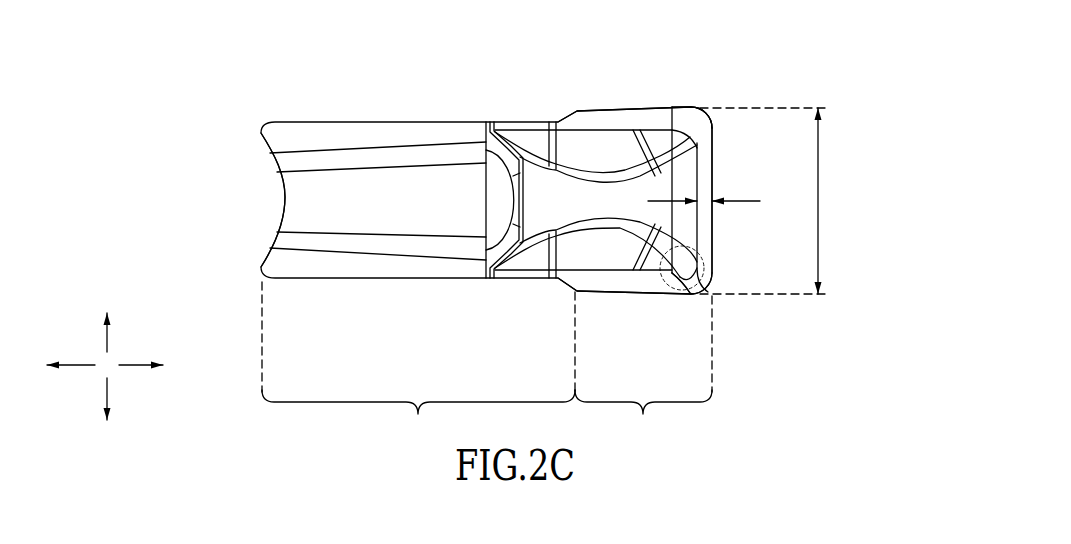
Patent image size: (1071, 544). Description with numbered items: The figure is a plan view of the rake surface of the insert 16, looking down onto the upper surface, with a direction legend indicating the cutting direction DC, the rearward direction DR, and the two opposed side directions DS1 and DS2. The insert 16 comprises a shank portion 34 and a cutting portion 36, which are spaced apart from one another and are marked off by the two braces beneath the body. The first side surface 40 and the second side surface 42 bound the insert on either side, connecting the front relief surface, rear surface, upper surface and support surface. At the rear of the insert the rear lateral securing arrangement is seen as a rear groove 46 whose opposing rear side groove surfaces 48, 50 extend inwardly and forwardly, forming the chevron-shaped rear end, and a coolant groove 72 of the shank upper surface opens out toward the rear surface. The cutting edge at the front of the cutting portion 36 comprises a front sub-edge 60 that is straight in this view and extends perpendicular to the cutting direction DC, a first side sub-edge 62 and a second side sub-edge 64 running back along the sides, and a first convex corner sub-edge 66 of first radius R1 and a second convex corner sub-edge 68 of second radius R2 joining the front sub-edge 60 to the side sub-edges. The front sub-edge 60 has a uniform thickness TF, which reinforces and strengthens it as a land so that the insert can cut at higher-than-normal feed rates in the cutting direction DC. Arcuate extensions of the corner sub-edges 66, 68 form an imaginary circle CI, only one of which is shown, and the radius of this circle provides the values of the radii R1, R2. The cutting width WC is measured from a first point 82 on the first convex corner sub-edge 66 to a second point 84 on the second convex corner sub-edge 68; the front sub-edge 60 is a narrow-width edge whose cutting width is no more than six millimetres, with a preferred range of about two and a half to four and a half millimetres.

The insert 16 is at (240, 85).
The shank portion 34 is at (418, 363).
The cutting portion 36 is at (643, 370).
The first side surface 40 is at (520, 118).
The second side surface 42 is at (520, 298).
The rear groove 46 is at (284, 194).
The rear side groove surface 48 is at (263, 147).
The rear side groove surface 50 is at (263, 262).
The front sub-edge 60 is at (712, 145).
The first side sub-edge 62 is at (618, 294).
The second side sub-edge 64 is at (625, 108).
The first convex corner sub-edge 66 is at (708, 287).
The second convex corner sub-edge 68 is at (705, 113).
The coolant groove 72 is at (308, 194).
The first point 82 is at (688, 297).
The second point 84 is at (694, 106).
The first radius R1 is at (699, 281).
The second radius R2 is at (689, 130).
The thickness TF is at (749, 203).
The cutting width WC is at (780, 201).
The imaginary circle CI is at (668, 273).
The first side direction DS1 is at (119, 315).
The second side direction DS2 is at (119, 420).
The rearward direction DR is at (56, 368).
The cutting direction DC is at (158, 371).